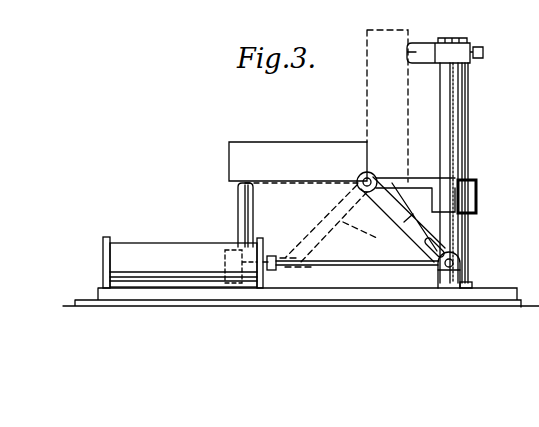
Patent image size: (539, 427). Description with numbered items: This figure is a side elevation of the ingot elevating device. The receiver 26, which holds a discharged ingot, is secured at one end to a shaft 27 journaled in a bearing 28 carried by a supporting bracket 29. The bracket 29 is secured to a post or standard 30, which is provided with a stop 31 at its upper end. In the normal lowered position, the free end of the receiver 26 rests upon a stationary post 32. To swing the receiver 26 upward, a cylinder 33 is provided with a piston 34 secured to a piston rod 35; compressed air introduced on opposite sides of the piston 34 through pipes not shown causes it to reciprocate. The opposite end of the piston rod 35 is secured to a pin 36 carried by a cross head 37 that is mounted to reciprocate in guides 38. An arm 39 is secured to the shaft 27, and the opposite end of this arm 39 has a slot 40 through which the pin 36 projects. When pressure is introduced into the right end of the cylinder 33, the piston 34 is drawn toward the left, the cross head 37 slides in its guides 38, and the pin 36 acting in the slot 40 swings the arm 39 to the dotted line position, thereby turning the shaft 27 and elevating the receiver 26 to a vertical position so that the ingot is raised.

The receiver 26 is at (275, 150).
The shaft 27 is at (372, 175).
The bearing 28 is at (392, 178).
The supporting bracket 29 is at (481, 195).
The post or standard 30 is at (461, 231).
The stop 31 is at (408, 43).
The stationary post 32 is at (243, 218).
The cylinder 33 is at (127, 253).
The piston 34 is at (224, 259).
The piston rod 35 is at (348, 261).
The pin 36 is at (461, 263).
The cross head 37 is at (463, 271).
The guides 38 is at (398, 286).
The arm 39 is at (405, 222).
The slot 40 is at (443, 246).